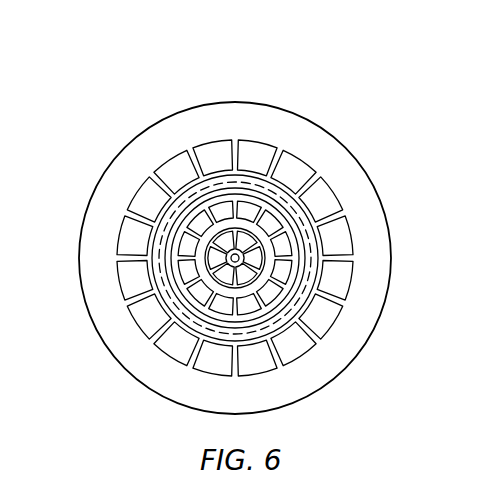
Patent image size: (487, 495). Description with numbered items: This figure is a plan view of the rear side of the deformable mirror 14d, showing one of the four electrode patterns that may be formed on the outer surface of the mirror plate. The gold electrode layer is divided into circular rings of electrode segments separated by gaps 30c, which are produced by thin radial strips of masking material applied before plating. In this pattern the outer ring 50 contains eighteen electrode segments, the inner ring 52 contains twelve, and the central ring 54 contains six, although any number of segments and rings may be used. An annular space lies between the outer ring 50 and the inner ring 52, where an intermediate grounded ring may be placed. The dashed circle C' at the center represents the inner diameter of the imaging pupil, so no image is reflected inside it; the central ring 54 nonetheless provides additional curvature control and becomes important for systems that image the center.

The deformable mirror 14d is at (300, 117).
The central ring 54 is at (231, 228).
The dashed line C' is at (316, 209).
The inner ring 52 is at (298, 269).
The outer ring 50 is at (323, 295).
The gaps 30c is at (216, 288).